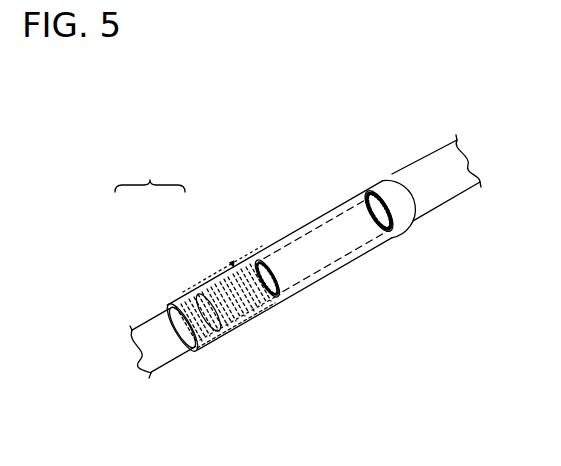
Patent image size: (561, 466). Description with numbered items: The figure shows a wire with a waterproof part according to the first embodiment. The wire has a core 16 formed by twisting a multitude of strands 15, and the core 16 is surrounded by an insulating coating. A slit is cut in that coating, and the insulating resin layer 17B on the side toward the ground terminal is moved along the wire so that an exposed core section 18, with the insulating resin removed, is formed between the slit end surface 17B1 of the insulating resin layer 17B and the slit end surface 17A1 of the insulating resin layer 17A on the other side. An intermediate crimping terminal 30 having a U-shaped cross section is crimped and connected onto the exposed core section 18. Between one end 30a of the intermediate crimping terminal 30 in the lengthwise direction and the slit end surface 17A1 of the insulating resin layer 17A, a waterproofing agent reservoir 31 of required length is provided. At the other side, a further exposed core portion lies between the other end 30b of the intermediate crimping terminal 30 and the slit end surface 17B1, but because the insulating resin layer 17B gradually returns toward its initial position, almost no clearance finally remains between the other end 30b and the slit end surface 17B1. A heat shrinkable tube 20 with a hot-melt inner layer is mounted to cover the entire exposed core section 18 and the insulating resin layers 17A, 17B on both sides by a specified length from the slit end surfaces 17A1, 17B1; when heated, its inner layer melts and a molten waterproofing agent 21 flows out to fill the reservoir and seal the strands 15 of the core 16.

The strands 15 is at (205, 275).
The core 16 is at (150, 174).
The insulating resin layer 17A is at (148, 326).
The slit end surface 17A1 is at (262, 308).
The insulating resin layer 17B is at (431, 152).
The slit end surface 17B1 is at (392, 234).
The exposed core section 18 is at (255, 315).
The heat shrinkable tube 20 is at (306, 221).
The molten waterproofing agent 21 is at (255, 260).
The intermediate crimping terminal 30 is at (306, 244).
The one end of the intermediate crimping terminal 30a is at (268, 300).
The another end of the intermediate crimping terminal 30b is at (393, 240).
The waterproofing agent reservoir 31 is at (232, 263).